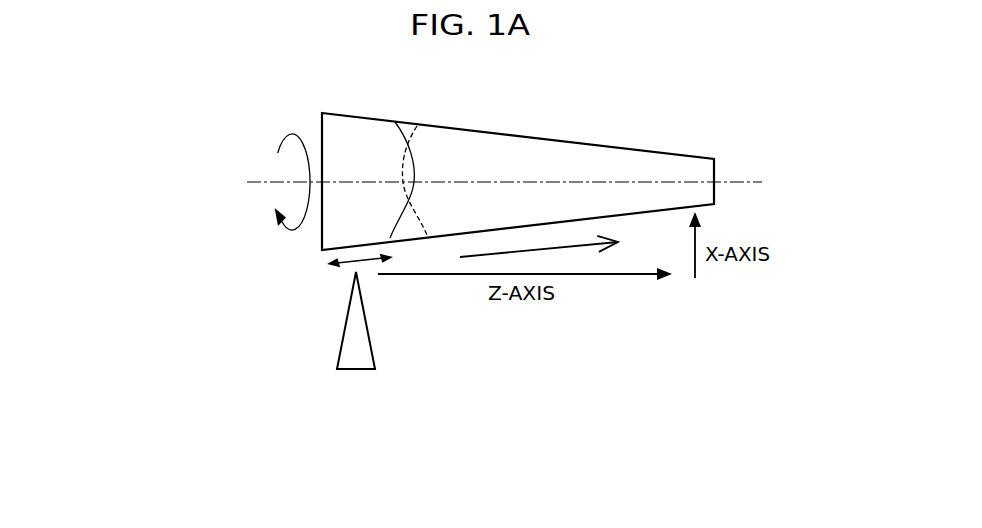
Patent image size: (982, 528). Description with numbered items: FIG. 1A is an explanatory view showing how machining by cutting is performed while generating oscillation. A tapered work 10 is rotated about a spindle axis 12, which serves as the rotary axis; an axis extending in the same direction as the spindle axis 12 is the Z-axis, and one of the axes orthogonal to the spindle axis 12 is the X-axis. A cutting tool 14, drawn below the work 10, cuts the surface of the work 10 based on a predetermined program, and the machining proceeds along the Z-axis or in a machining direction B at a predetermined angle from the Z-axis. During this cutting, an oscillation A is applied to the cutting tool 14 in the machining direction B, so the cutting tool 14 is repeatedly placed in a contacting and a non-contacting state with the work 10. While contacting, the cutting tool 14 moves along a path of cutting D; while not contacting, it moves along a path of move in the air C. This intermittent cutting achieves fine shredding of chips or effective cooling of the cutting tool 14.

The work 10 is at (617, 147).
The spindle axis 12 is at (422, 182).
The cutting tool 14 is at (355, 370).
The oscillation A is at (348, 268).
The machining direction B is at (568, 249).
The path of move in the air C is at (394, 151).
The path of cutting D is at (432, 151).